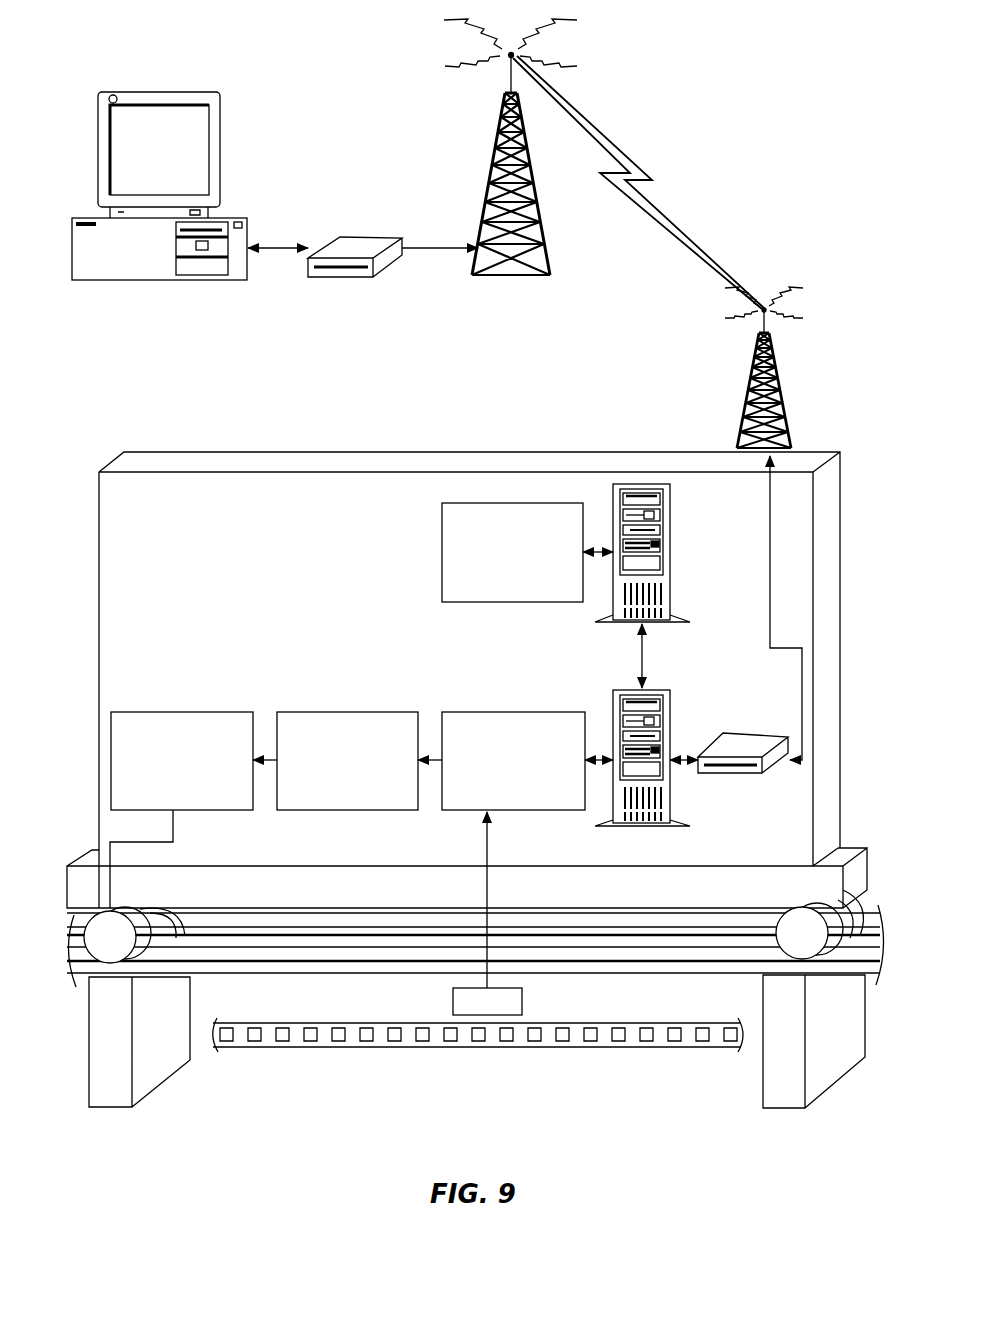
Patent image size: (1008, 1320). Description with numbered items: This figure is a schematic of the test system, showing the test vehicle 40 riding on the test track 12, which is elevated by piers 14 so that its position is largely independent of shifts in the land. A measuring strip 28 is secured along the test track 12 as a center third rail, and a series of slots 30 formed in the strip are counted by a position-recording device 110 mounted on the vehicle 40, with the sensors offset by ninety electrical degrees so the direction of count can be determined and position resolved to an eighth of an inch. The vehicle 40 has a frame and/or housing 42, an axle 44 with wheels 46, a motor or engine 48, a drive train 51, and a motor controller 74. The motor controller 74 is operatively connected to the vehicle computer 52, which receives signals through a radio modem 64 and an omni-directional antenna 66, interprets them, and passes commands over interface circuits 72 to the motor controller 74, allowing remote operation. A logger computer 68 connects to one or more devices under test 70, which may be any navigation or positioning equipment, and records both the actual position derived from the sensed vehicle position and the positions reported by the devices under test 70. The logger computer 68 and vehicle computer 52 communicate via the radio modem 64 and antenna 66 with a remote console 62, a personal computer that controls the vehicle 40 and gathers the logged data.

The test track 12 is at (863, 975).
The piers 14 is at (132, 1107).
The measuring strip 28 is at (505, 1047).
The slots 30 is at (305, 1003).
The test vehicle 40 is at (843, 816).
The frame and/or housing 42 is at (841, 868).
The axle 44 is at (147, 887).
The wheels 46 is at (158, 912).
The motor or engine 48 is at (318, 708).
The drive train 51 is at (108, 886).
The vehicle computer 52 is at (670, 708).
The console 62 is at (143, 90).
The radio modem 64 is at (357, 235).
The antenna 66 is at (494, 150).
The logger computer 68 is at (670, 518).
The device under test 70 is at (441, 520).
The interface circuits 72 is at (483, 708).
The motor controller 74 is at (153, 708).
The position-recording device 110 is at (522, 1004).